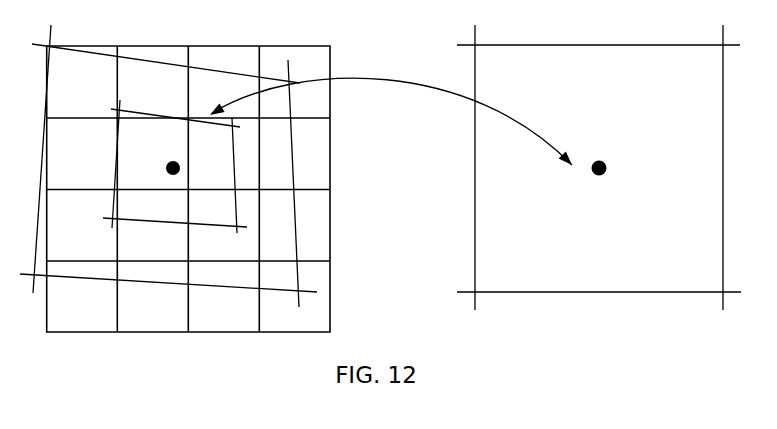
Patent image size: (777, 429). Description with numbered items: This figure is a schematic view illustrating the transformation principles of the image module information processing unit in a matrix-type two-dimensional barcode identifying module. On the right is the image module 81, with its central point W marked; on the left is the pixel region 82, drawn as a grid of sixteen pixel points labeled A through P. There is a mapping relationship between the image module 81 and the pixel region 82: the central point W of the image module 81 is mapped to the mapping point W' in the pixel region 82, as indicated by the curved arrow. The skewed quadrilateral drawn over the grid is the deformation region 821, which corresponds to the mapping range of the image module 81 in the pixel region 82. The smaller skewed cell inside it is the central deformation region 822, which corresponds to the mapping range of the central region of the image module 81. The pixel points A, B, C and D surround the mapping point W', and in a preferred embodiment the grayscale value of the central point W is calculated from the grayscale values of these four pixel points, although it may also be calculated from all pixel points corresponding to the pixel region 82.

The image module 81 is at (528, 43).
The pixel region 82 is at (138, 45).
The deformation region 821 is at (292, 131).
The central deformation region 822 is at (236, 200).